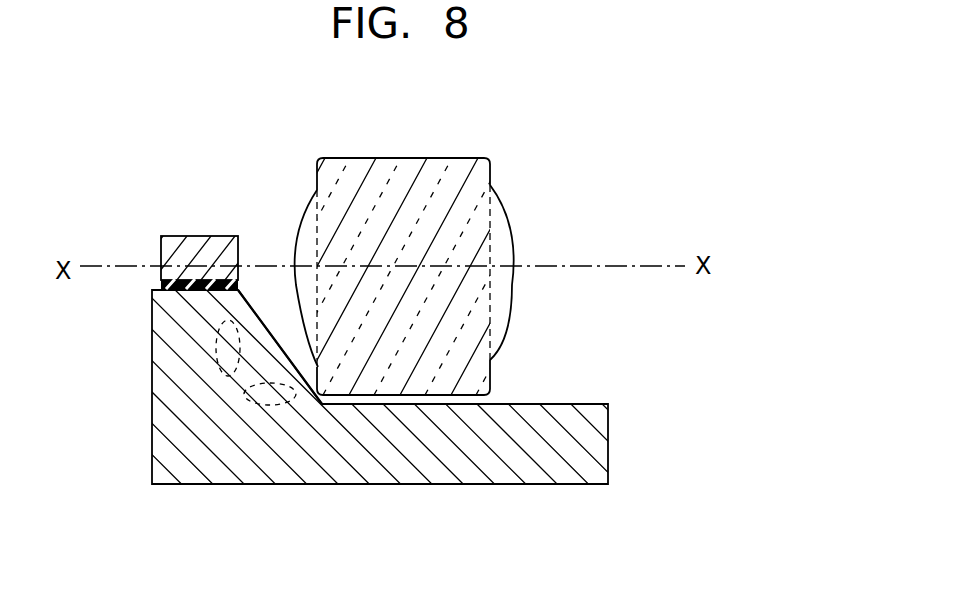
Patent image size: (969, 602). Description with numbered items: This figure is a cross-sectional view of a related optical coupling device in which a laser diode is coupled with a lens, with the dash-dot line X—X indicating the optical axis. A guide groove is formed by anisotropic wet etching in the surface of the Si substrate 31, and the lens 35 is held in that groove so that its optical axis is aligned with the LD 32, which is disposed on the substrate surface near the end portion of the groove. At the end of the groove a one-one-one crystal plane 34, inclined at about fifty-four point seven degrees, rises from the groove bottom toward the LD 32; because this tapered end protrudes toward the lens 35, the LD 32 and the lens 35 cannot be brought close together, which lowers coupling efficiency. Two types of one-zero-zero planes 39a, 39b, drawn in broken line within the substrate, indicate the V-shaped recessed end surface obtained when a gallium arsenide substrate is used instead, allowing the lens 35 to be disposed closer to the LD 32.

The Si substrate 31 is at (593, 457).
The LD 32 is at (190, 248).
The {111} crystal plane 34 is at (266, 322).
The lens 35 is at (413, 190).
The {100} plane 39a is at (238, 291).
The {100} plane 39b is at (296, 398).